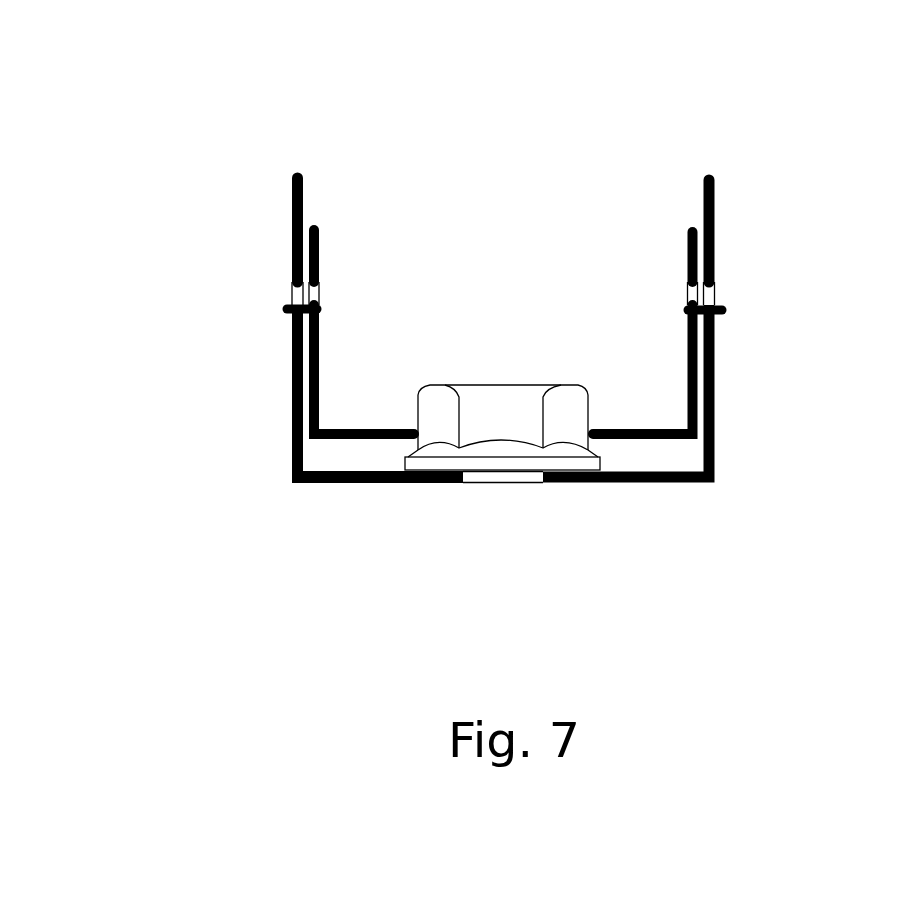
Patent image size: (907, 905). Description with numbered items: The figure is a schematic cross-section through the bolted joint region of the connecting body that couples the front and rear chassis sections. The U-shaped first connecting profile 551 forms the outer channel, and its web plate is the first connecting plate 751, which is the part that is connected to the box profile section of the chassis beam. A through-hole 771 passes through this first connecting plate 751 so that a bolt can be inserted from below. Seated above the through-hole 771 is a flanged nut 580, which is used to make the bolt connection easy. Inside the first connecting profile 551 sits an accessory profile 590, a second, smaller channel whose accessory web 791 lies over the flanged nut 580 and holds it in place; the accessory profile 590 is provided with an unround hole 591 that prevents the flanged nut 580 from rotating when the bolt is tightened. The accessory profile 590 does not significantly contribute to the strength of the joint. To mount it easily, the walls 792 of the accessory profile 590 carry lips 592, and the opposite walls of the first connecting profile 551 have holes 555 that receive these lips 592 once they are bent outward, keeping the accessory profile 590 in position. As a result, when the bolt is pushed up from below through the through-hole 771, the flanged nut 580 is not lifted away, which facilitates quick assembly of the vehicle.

The first connecting profile 551 is at (272, 470).
The holes 555 is at (297, 295).
The flanged nut 580 is at (482, 428).
The accessory profile 590 is at (670, 255).
The unround hole 591 is at (413, 427).
The lip 592 is at (287, 312).
The first connecting plate 751 is at (333, 482).
The through-hole 771 is at (512, 481).
The accessory web 791 is at (652, 437).
The walls 792 is at (697, 377).